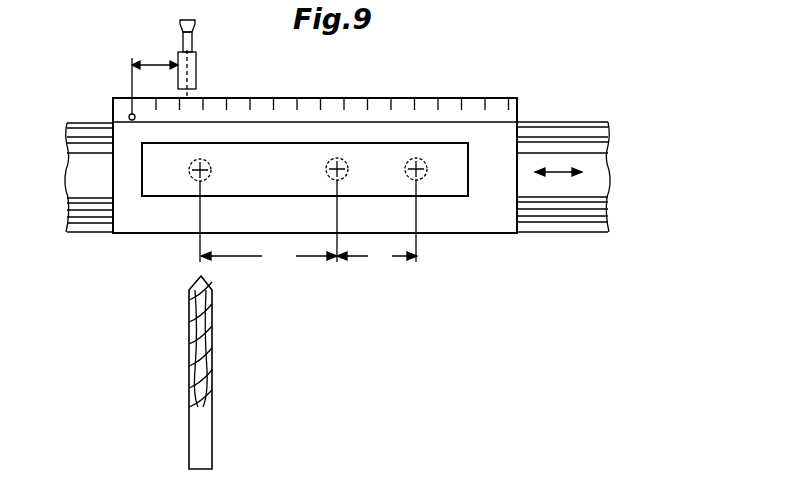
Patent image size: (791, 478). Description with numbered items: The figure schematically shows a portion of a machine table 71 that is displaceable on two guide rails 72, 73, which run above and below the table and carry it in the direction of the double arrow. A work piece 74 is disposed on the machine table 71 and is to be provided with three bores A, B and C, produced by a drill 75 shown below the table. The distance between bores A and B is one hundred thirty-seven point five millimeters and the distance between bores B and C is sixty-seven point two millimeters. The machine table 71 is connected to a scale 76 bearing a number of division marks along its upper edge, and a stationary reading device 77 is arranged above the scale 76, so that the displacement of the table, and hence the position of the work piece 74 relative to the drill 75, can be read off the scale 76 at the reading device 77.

The machine table 71 is at (494, 216).
The guide rail 72 is at (597, 139).
The guide rail 73 is at (602, 212).
The work piece 74 is at (457, 157).
The drill 75 is at (203, 450).
The scale 76 is at (375, 105).
The stationary reading device 77 is at (192, 73).